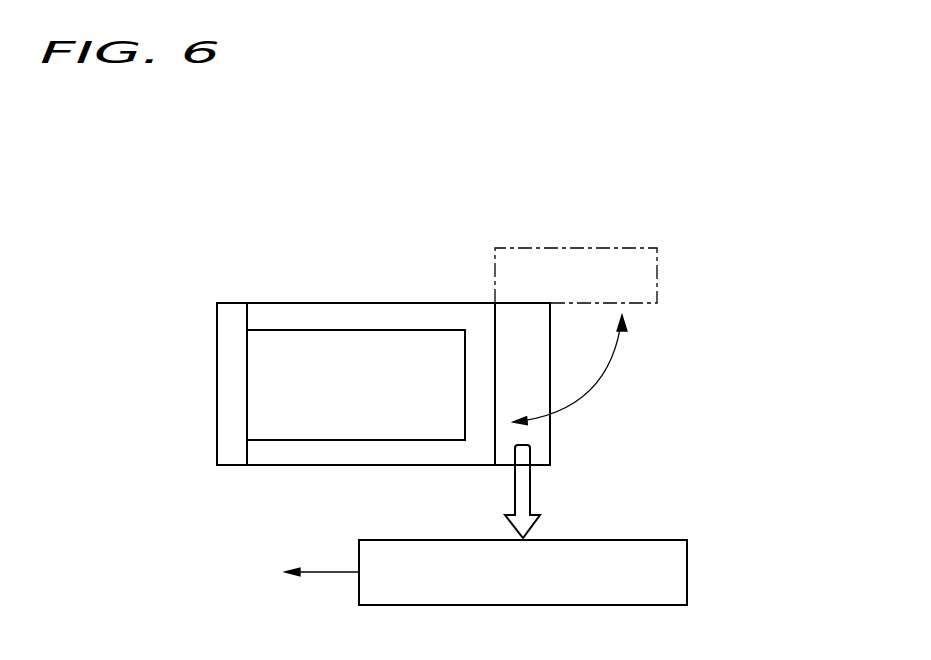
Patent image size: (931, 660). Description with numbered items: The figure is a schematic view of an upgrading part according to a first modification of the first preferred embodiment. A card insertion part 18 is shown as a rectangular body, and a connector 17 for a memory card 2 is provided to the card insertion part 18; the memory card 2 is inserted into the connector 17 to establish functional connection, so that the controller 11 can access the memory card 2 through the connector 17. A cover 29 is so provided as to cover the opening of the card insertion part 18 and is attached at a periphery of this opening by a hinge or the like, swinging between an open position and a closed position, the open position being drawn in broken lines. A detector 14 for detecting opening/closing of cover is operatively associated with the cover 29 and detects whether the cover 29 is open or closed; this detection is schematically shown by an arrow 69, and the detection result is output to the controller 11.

The memory card 2 is at (333, 343).
The controller 11 is at (209, 571).
The detector for detecting opening/closing of cover 14 is at (687, 572).
The connector 17 is at (232, 318).
The card insertion part 18 is at (438, 302).
The cover 29 is at (520, 327).
The arrow 69 is at (530, 492).